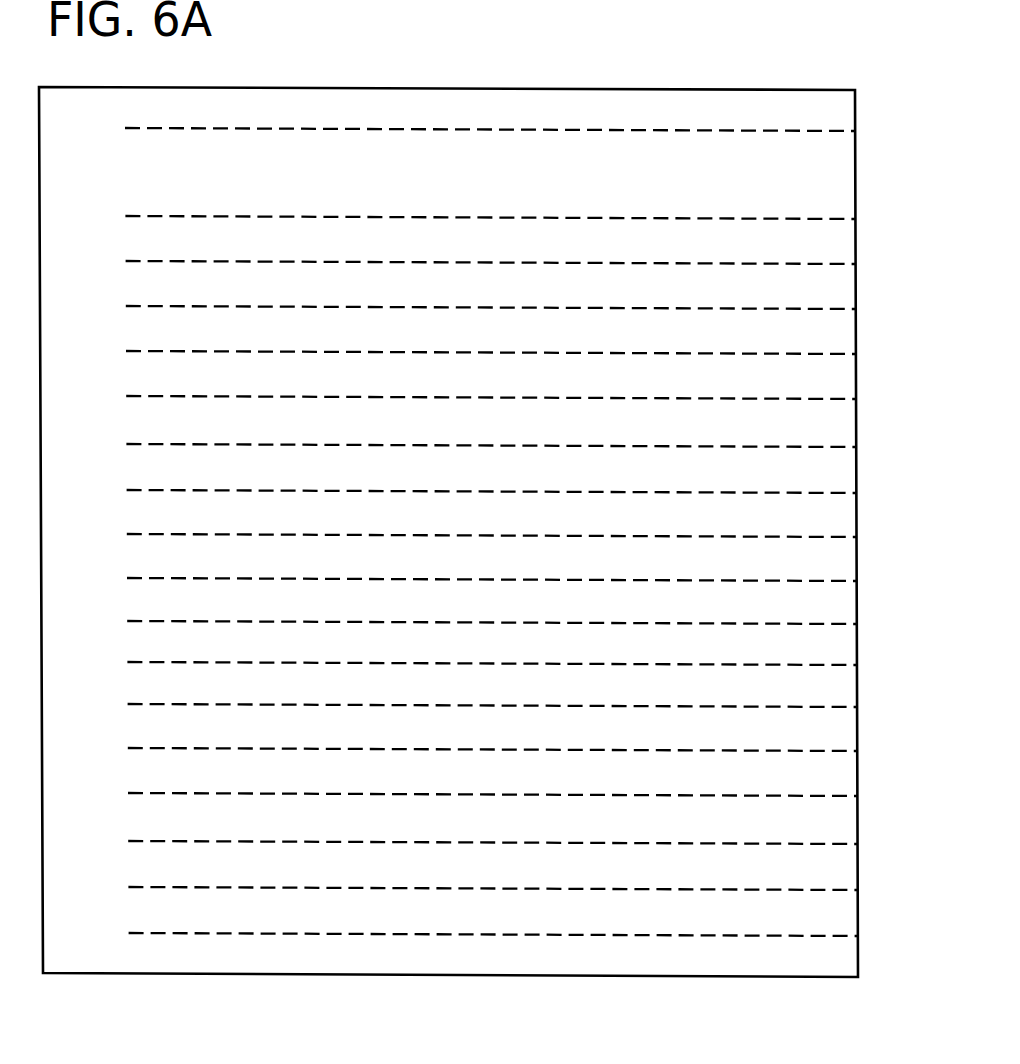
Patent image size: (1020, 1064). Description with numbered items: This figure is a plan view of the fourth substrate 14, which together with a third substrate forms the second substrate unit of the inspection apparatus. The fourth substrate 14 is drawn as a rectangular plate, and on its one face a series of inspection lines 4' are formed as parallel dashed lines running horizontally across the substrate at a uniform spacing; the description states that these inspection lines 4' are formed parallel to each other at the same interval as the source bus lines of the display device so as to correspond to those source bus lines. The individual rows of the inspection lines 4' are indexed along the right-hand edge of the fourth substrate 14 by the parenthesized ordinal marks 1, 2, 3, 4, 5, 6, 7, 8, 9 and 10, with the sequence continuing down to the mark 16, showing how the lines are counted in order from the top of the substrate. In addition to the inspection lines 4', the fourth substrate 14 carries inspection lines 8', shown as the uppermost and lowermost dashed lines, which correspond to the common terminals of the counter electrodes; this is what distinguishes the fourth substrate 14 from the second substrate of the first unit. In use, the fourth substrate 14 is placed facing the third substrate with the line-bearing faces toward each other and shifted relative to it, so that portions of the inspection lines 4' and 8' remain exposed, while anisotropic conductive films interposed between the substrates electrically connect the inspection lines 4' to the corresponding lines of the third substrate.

The fourth substrate 14 is at (448, 496).
The inspection lines 4' is at (522, 458).
The inspection lines 8' is at (491, 534).
The slice line 1 is at (513, 217).
The slice line 2 is at (514, 262).
The slice line 3 is at (514, 307).
The slice line 4 is at (514, 352).
The slice line 5 is at (514, 397).
The slice line 6 is at (514, 445).
The slice line 7 is at (514, 491).
The slice line 8 is at (514, 535).
The slice line 9 is at (514, 579).
The slice line 10 is at (523, 622).
The slice line 16 is at (524, 888).